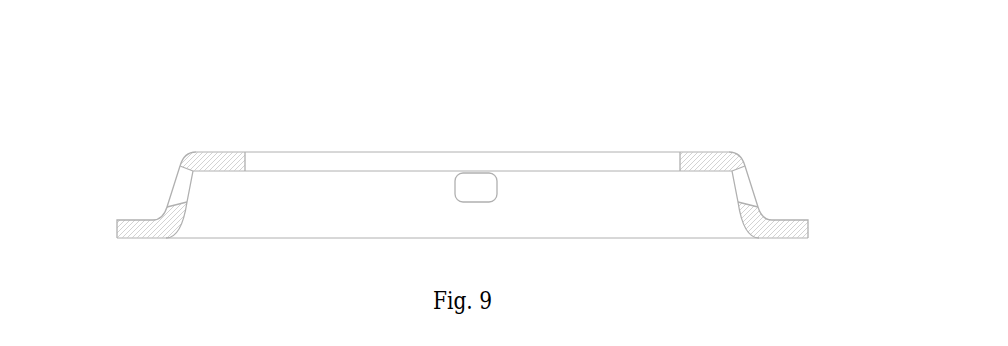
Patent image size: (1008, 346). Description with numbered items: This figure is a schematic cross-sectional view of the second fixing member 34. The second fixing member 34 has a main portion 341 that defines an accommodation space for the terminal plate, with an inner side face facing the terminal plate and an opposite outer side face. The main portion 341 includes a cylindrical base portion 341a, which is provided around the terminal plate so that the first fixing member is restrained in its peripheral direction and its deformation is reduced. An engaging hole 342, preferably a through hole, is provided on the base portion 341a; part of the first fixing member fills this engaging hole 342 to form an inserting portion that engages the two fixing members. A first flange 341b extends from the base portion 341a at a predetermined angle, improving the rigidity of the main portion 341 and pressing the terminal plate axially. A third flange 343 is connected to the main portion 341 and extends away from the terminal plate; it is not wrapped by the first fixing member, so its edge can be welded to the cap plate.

The second fixing member 34 is at (503, 37).
The main portion 341 is at (857, 145).
The base portion 341a is at (757, 204).
The first flange 341b is at (705, 151).
The engaging hole 342 is at (173, 185).
The third flange 343 is at (140, 230).